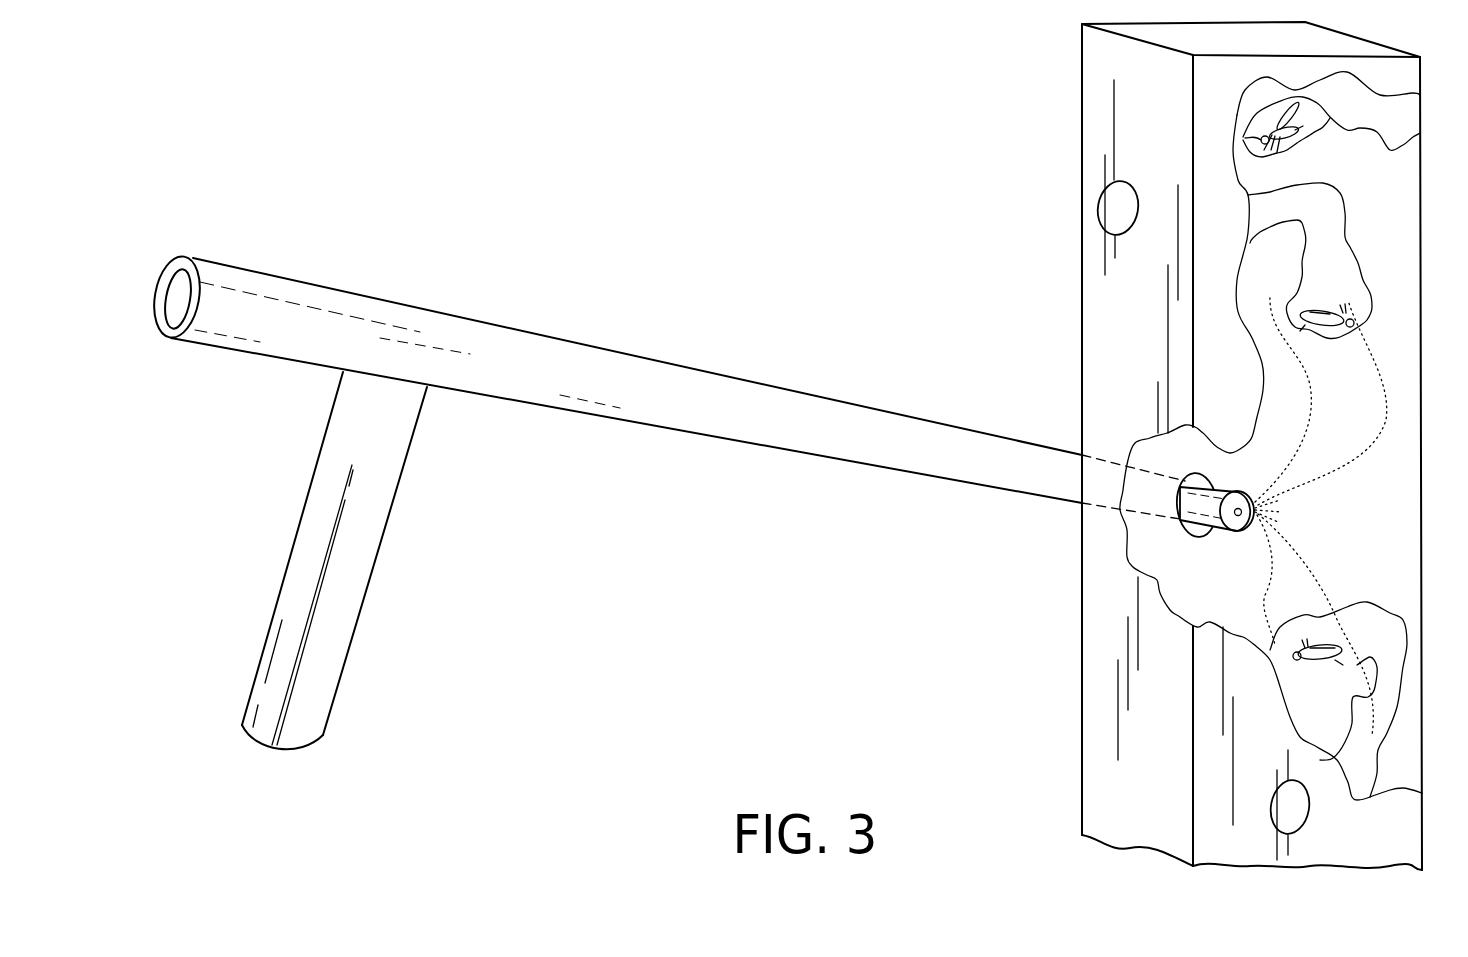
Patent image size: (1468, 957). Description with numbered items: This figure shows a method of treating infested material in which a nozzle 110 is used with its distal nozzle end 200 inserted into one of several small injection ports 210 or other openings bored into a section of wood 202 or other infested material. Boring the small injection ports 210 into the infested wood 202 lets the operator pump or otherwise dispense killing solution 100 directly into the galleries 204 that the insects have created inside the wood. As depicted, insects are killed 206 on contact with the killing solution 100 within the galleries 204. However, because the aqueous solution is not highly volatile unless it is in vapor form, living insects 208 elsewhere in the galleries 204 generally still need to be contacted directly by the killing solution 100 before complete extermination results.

The killing solution 100 is at (1321, 515).
The nozzle 110 is at (933, 430).
The distal nozzle end 200 is at (1240, 536).
The section of wood 202 is at (1080, 113).
The galleries 204 is at (1352, 246).
The killed insects 206 is at (1325, 308).
The living insects 208 is at (1285, 142).
The injection ports 210 is at (1100, 210).